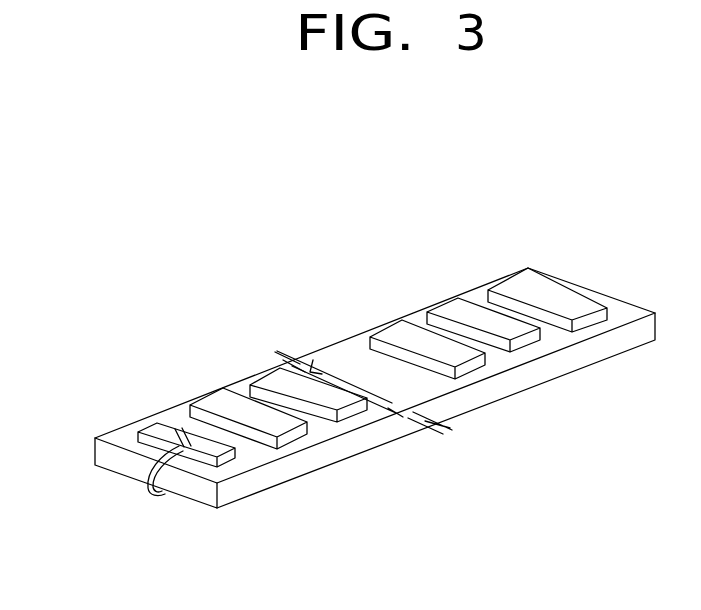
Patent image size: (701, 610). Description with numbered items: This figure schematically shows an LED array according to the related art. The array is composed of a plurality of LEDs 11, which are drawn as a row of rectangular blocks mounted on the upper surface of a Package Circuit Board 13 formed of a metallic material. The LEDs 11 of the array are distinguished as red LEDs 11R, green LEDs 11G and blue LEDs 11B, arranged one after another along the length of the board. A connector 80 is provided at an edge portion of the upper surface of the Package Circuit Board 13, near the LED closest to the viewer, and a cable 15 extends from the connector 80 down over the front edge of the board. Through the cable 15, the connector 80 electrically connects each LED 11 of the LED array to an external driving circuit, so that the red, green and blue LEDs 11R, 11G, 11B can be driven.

The LED 11 is at (306, 236).
The red LED 11R is at (215, 402).
The green LED 11G is at (275, 378).
The blue LED 11B is at (337, 353).
The Package Circuit Board 13 is at (127, 462).
The cable 15 is at (147, 497).
The connector 80 is at (165, 432).